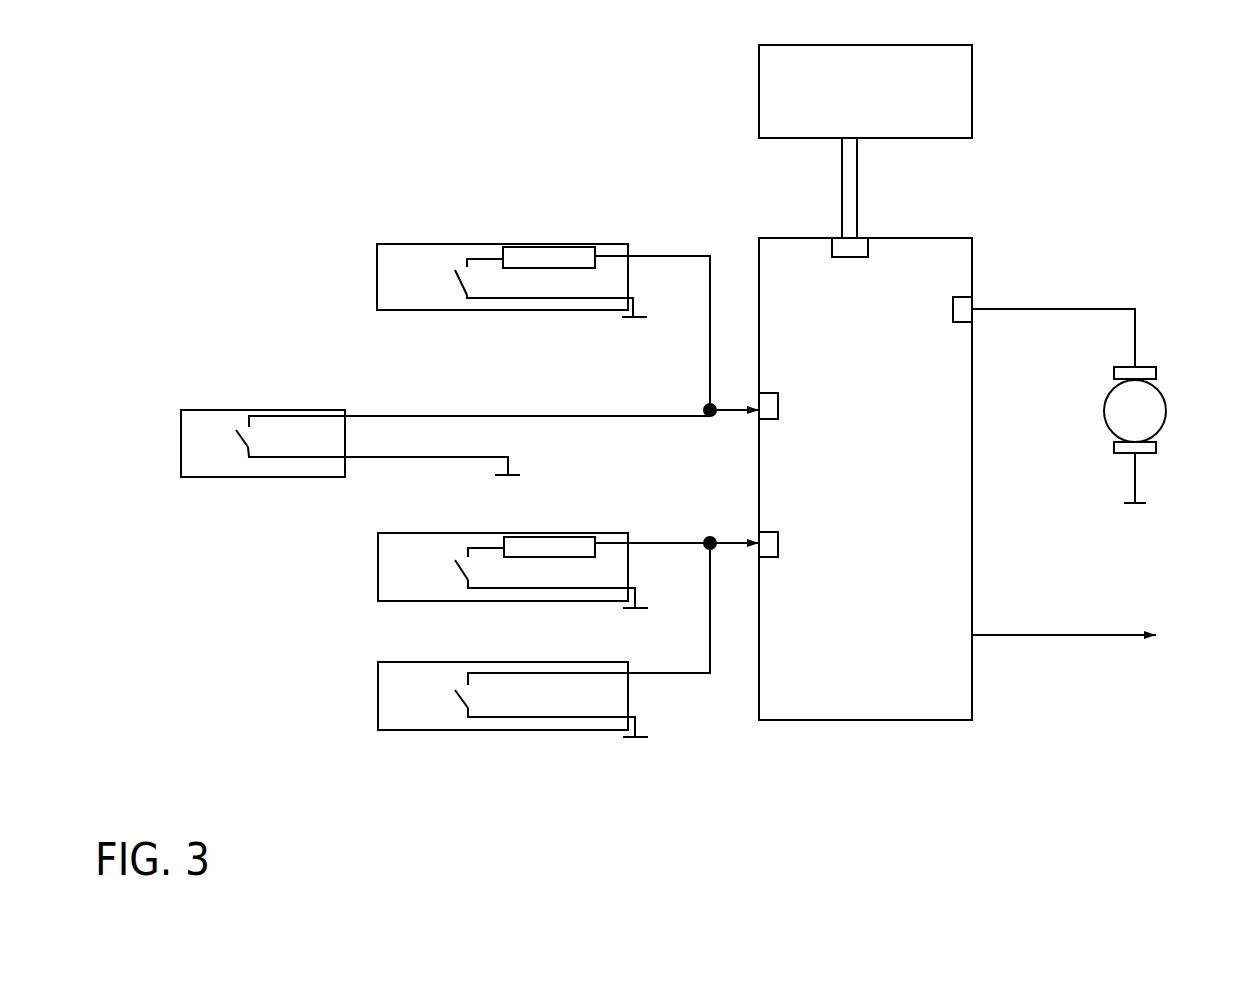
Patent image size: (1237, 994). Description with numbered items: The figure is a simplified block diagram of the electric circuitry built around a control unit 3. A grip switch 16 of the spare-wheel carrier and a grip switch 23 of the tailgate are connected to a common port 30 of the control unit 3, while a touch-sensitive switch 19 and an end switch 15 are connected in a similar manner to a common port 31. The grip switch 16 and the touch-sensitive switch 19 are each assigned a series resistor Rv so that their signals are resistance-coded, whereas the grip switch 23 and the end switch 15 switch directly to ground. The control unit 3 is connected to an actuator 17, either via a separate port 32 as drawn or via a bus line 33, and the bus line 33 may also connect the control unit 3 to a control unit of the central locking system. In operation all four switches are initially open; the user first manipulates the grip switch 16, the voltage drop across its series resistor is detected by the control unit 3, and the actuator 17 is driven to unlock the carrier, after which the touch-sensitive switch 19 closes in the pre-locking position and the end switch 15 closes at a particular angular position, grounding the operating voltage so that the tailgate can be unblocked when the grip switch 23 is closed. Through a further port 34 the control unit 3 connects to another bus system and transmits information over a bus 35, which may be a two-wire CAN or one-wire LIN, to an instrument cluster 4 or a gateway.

The control unit 3 is at (902, 702).
The instrument cluster 4 is at (953, 60).
The end switch 15 is at (387, 702).
The grip switch 16 is at (409, 262).
The actuator 17 is at (1156, 412).
The touch-sensitive switch 19 is at (387, 572).
The grip switch 23 is at (209, 427).
The common port 30 is at (768, 405).
The common port 31 is at (770, 550).
The separate port 32 is at (960, 307).
The bus line 33 is at (1031, 635).
The port 34 is at (857, 245).
The bus 35 is at (848, 205).